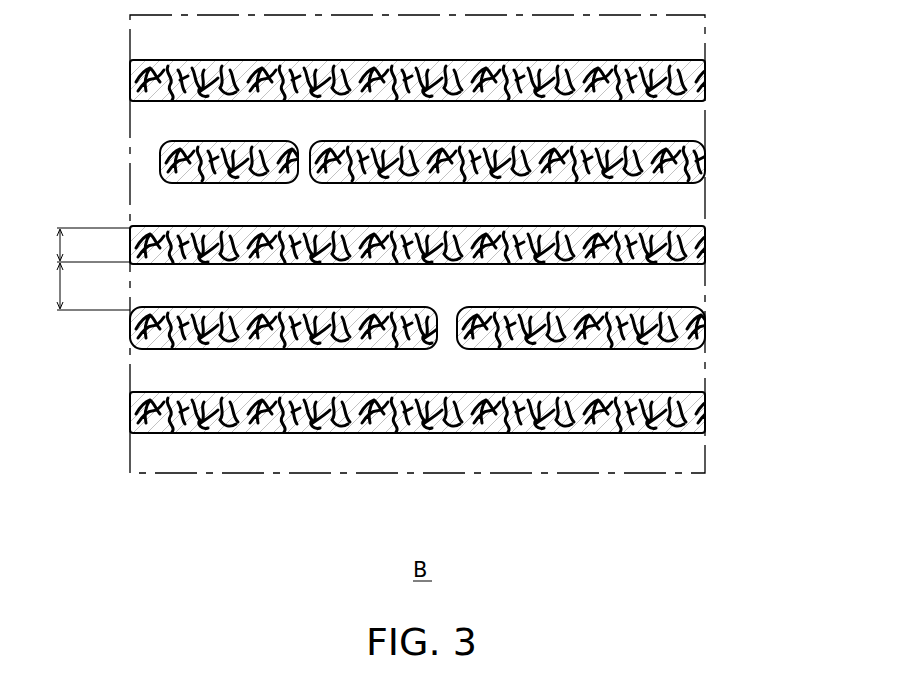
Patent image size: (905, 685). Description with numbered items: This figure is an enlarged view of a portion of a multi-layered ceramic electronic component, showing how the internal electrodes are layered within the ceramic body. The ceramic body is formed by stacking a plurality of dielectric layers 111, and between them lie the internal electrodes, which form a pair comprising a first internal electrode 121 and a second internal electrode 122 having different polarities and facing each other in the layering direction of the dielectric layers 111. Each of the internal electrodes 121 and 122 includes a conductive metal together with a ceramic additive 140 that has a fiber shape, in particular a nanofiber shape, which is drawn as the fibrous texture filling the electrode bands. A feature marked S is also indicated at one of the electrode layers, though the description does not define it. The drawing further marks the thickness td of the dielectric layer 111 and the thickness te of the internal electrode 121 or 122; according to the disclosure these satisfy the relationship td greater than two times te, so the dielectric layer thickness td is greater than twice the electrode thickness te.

The dielectric layer 111 is at (697, 292).
The first internal electrode 121 is at (697, 246).
The second internal electrode 122 is at (704, 155).
The ceramic additive 140 is at (486, 151).
The slit S is at (287, 349).
The thickness of the internal electrode te is at (80, 245).
The thickness of the dielectric layer td is at (80, 286).